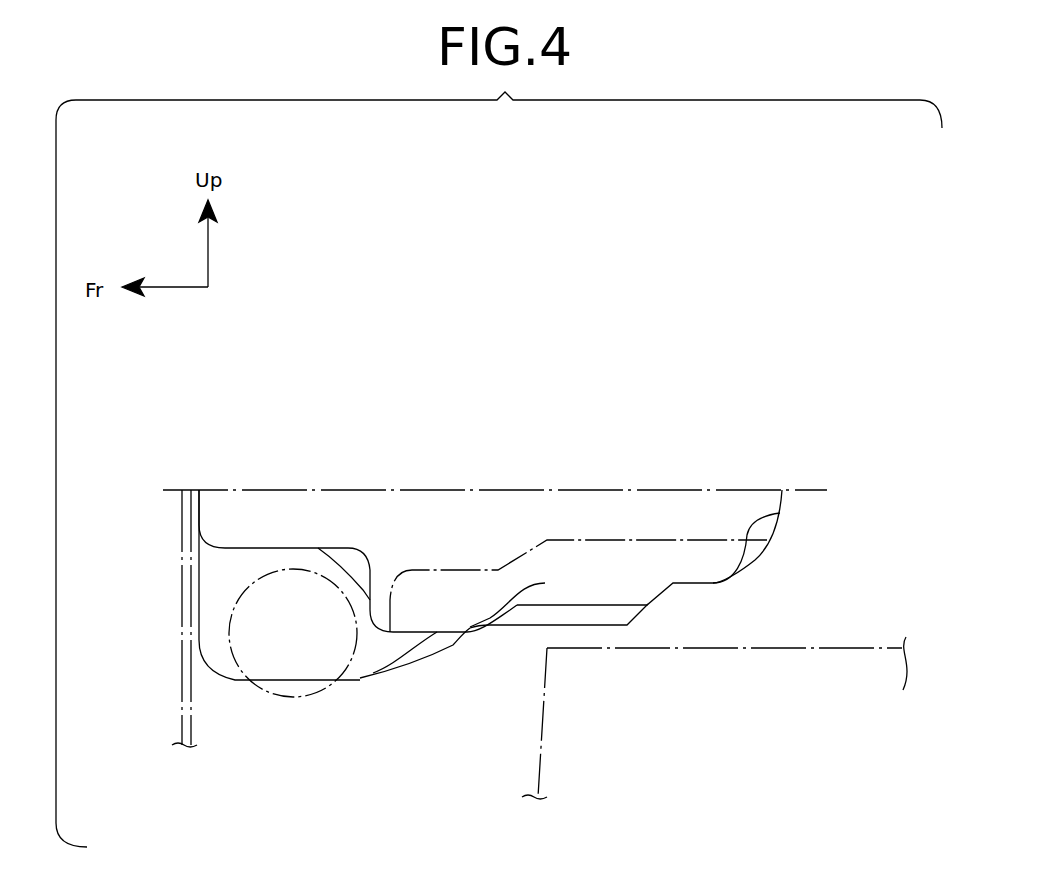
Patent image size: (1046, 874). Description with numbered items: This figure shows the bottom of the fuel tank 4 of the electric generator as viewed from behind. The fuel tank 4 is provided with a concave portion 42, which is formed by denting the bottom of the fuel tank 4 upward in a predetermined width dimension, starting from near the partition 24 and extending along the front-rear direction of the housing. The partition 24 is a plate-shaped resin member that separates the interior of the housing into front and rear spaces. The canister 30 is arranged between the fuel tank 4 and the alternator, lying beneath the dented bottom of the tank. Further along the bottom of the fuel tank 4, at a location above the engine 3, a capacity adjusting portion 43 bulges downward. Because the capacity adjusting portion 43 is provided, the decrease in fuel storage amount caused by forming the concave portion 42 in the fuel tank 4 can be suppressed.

The engine 3 is at (560, 737).
The fuel tank 4 is at (782, 515).
The partition 24 is at (187, 522).
The canister 30 is at (230, 623).
The concave portion 42 is at (362, 560).
The capacity adjusting portion 43 is at (715, 557).